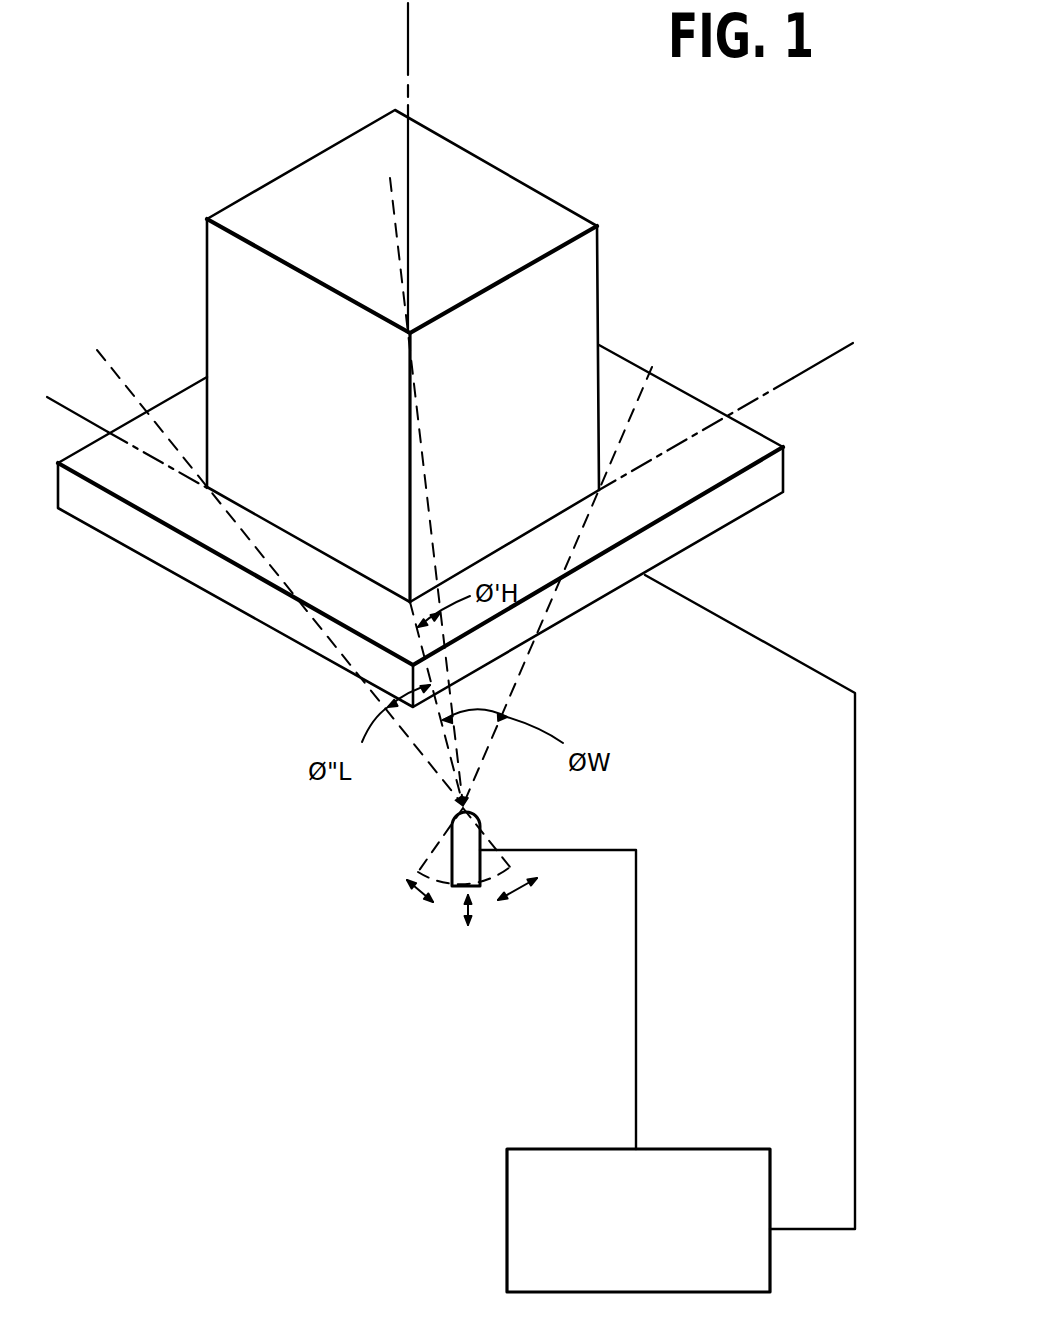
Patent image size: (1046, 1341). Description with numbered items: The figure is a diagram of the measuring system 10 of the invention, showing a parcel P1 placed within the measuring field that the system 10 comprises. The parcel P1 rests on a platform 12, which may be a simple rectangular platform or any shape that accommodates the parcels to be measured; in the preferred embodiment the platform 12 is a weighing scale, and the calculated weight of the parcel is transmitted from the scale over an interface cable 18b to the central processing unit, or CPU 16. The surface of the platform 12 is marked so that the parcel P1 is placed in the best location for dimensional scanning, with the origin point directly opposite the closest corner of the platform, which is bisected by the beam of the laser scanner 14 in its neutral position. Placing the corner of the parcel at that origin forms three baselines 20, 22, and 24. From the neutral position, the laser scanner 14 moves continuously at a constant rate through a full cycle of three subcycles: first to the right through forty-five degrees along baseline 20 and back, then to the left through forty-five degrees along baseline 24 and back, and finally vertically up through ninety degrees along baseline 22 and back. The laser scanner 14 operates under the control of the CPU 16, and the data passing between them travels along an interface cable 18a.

The system 10 is at (207, 688).
The platform 12 is at (168, 562).
The laser scanner 14 is at (480, 822).
The central processing unit 16 is at (572, 1148).
The interface cable 18a is at (636, 930).
The interface cable 18b is at (853, 845).
The baseline 20 is at (813, 362).
The baseline 22 is at (408, 48).
The baseline 24 is at (69, 405).
The parcel P1 is at (523, 205).